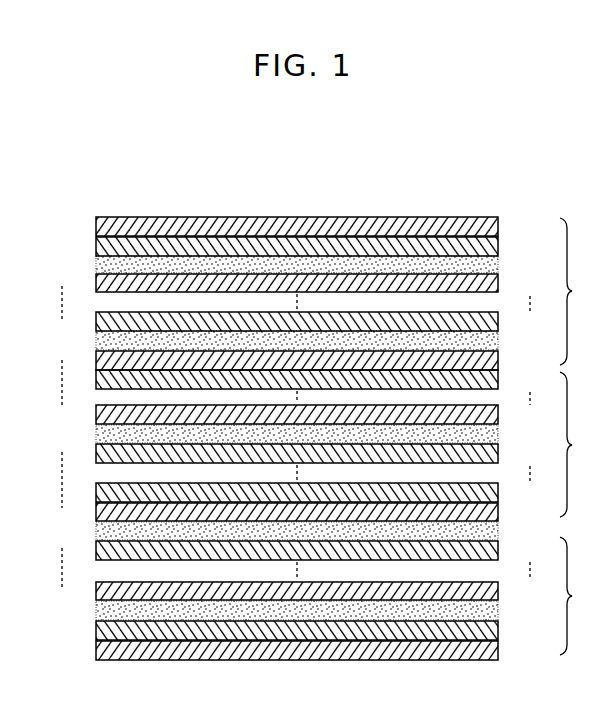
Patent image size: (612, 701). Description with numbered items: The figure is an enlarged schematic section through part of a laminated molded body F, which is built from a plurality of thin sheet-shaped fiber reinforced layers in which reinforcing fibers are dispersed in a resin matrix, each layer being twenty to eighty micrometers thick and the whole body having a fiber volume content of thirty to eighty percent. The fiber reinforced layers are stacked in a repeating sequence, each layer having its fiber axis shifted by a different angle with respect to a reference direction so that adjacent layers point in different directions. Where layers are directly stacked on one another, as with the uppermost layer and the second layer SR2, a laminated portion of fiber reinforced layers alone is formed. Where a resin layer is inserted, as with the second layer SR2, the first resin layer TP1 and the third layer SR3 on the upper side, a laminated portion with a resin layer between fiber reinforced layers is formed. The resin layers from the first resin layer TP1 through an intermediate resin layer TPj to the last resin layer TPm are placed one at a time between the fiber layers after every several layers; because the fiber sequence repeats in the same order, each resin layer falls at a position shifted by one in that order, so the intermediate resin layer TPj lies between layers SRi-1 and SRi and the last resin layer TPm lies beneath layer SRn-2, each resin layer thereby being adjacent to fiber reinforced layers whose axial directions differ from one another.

The laminated molded body F is at (133, 158).
The first resin layer TP1 is at (96, 266).
The j-th resin layer TPj is at (96, 434).
The m-th resin layer TPm is at (96, 611).
The second fiber reinforced layer SR2 is at (498, 247).
The third fiber reinforced layer SR3 is at (498, 284).
The (n-2)th fiber reinforced layer SRn-2 is at (498, 592).
The (i-1)th fiber reinforced layer SRi-1 is at (498, 415).
The i-th fiber reinforced layer SRi is at (498, 454).